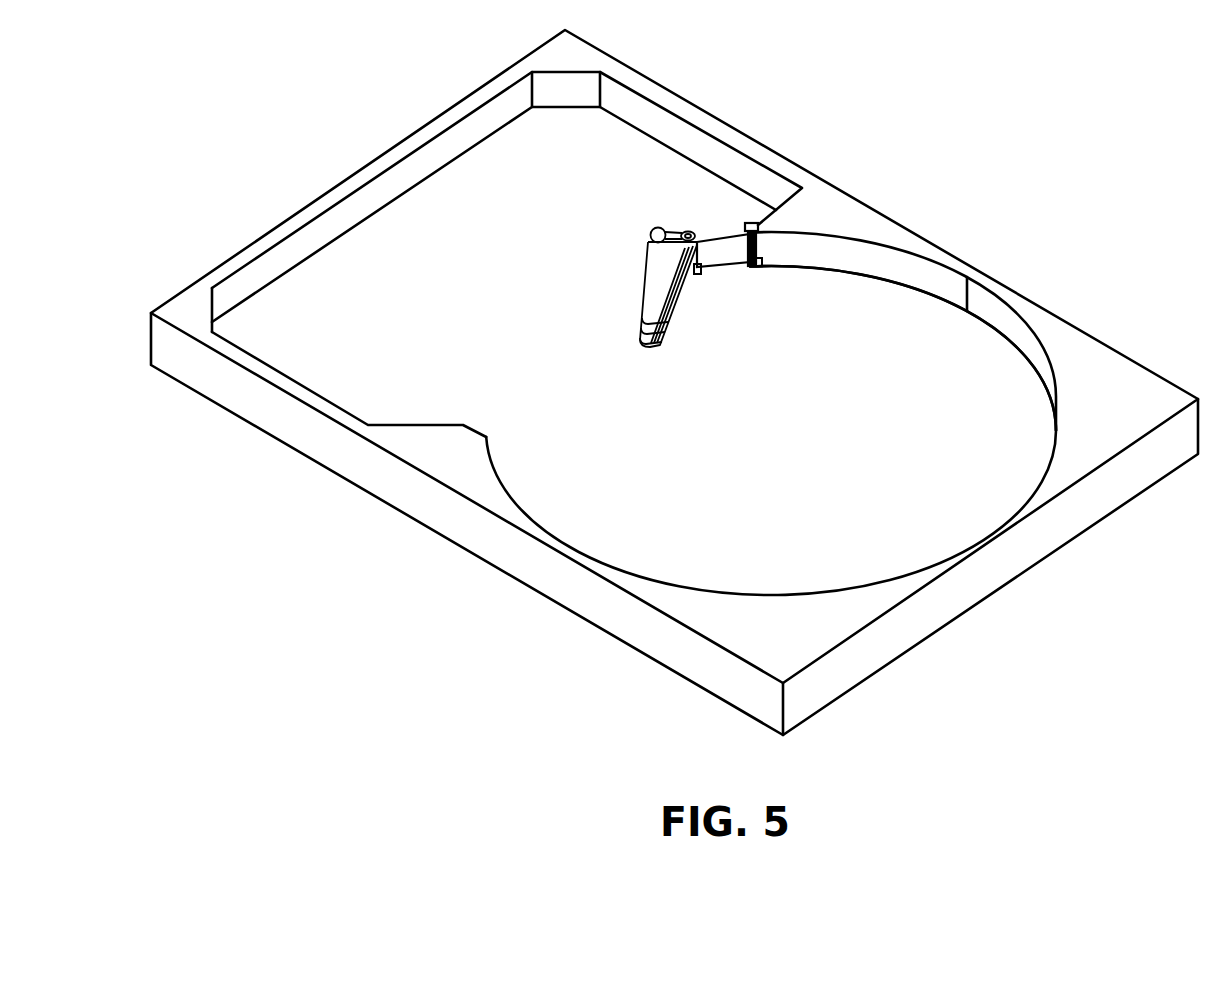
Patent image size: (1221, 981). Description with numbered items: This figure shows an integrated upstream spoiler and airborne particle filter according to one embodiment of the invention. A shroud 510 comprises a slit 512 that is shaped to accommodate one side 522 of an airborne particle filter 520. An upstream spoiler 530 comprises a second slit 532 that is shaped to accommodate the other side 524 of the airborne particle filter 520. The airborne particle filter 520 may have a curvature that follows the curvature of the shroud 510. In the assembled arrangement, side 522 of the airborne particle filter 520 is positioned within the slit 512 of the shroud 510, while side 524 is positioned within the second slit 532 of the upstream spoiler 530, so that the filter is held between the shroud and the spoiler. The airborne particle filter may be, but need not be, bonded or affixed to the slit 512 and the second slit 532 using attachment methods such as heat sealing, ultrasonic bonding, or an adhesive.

The shroud 510 is at (875, 262).
The slit 512 is at (755, 222).
The airborne particle filter 520 is at (738, 239).
The side of airborne particle filter 522 is at (747, 248).
The side of airborne particle filter 524 is at (703, 257).
The upstream spoiler 530 is at (652, 277).
The second slit 532 is at (688, 232).